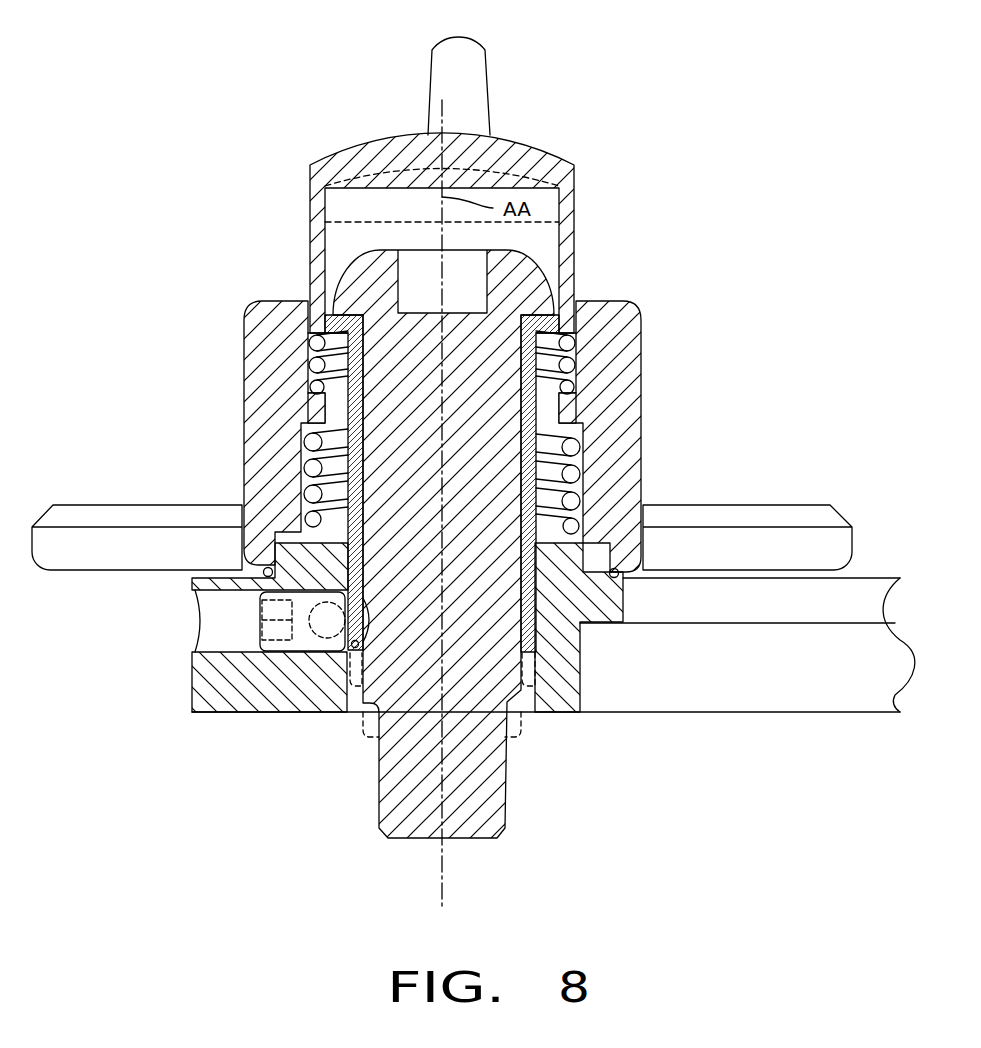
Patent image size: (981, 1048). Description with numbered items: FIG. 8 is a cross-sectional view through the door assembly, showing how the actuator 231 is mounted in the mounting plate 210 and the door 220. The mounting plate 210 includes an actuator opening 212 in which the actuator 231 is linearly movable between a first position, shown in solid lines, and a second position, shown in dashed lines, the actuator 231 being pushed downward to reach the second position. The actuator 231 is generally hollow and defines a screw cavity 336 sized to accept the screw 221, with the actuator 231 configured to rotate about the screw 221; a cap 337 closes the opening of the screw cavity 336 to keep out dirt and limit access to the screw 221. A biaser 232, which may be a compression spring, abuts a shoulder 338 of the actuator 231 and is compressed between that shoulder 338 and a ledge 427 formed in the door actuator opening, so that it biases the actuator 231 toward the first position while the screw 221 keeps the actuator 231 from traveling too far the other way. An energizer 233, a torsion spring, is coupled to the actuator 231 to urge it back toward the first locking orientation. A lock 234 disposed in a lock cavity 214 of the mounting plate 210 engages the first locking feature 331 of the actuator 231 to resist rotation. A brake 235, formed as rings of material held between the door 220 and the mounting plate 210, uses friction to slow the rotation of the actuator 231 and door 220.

The mounting plate 210 is at (810, 692).
The actuator opening 212 is at (289, 547).
The lock cavity 214 is at (213, 605).
The door 220 is at (643, 370).
The screw 221 is at (538, 279).
The actuator 231 is at (310, 245).
The biaser 232 is at (314, 372).
The energizer 233 is at (575, 446).
The lock 234 is at (277, 628).
The brake 235 is at (620, 572).
The first locking feature 331 is at (362, 602).
The screw cavity 336 is at (361, 214).
The cap 337 is at (516, 148).
The shoulder 338 is at (314, 343).
The ledge 427 is at (315, 410).